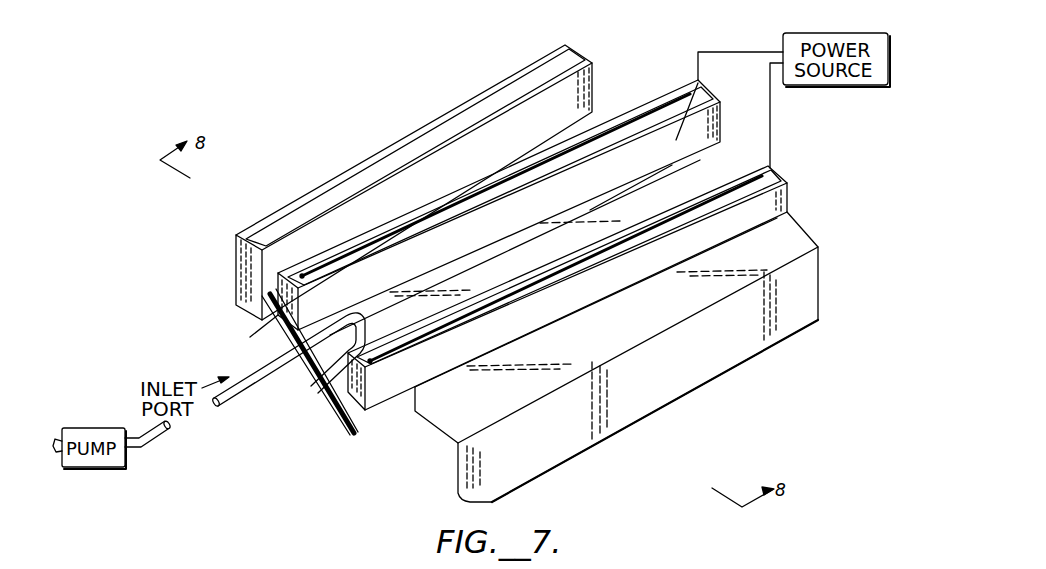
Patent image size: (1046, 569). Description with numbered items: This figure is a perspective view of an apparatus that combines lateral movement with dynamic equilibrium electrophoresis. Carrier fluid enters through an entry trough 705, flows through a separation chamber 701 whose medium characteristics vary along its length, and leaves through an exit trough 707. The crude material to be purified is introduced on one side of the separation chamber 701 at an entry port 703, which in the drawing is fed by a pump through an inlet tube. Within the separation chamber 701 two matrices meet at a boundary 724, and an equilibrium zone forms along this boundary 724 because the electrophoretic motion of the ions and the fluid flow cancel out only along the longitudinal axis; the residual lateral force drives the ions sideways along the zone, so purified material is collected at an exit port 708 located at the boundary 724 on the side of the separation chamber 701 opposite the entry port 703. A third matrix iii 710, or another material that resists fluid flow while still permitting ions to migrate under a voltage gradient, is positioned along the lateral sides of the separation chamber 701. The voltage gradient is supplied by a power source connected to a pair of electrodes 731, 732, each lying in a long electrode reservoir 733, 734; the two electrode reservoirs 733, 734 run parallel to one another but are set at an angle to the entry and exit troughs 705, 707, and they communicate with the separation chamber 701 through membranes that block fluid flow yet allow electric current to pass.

The separation chamber 701 is at (270, 328).
The entry port 703 is at (320, 388).
The entry trough 705 is at (242, 256).
The exit trough 707 is at (688, 387).
The exit port 708 is at (673, 165).
The third matrix iii 710 is at (343, 406).
The boundary 724 is at (590, 210).
The electrode 731 is at (702, 83).
The electrode 732 is at (775, 172).
The electrode reservoir 733 is at (716, 106).
The electrode reservoir 734 is at (778, 193).